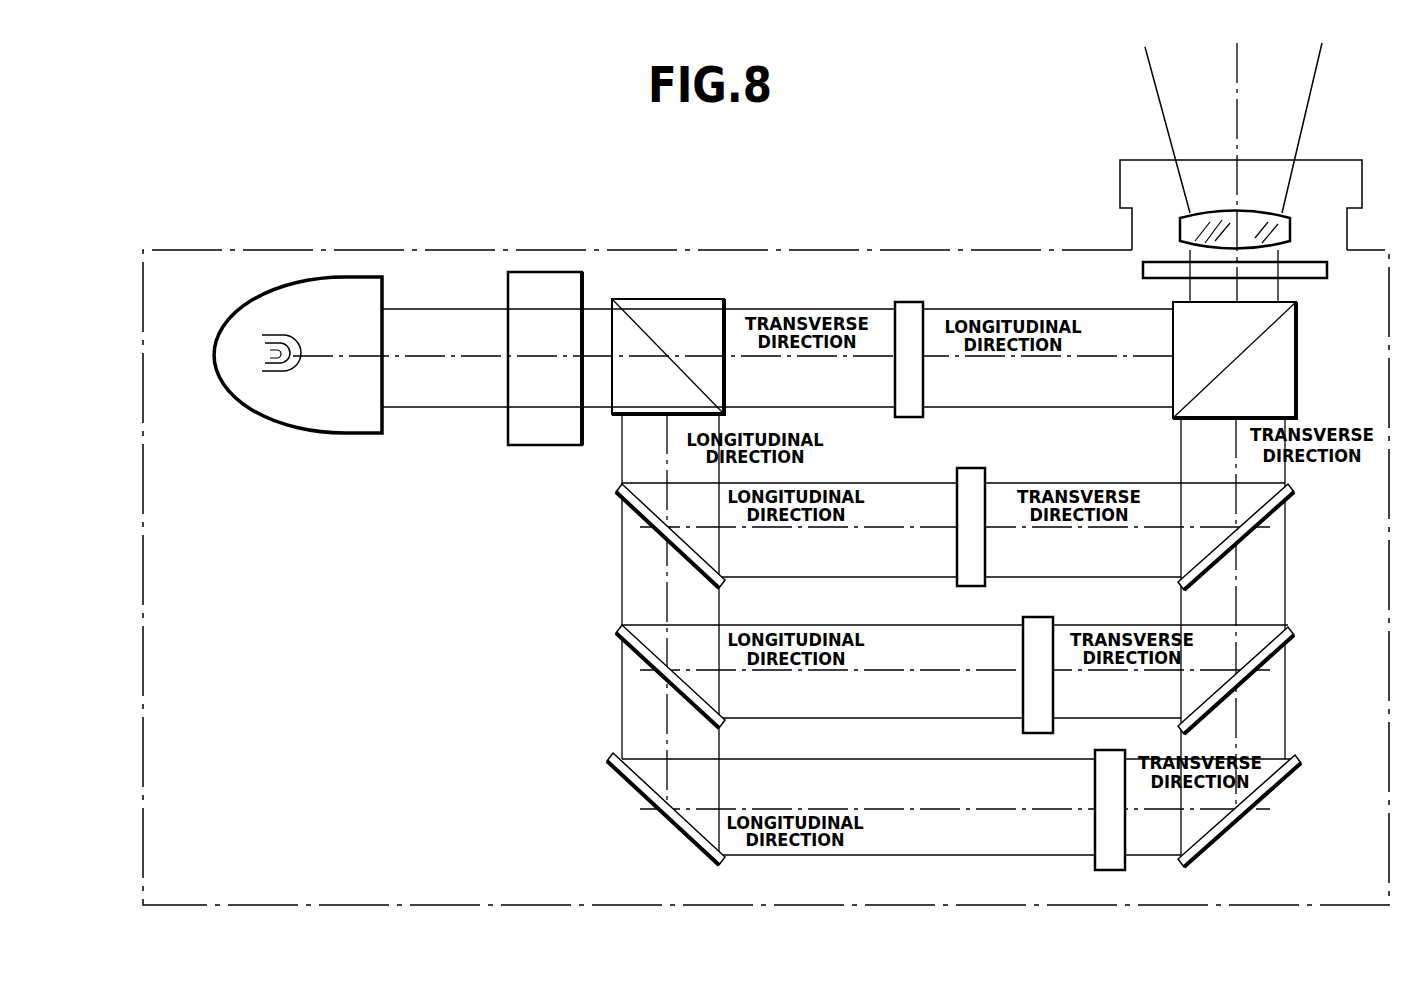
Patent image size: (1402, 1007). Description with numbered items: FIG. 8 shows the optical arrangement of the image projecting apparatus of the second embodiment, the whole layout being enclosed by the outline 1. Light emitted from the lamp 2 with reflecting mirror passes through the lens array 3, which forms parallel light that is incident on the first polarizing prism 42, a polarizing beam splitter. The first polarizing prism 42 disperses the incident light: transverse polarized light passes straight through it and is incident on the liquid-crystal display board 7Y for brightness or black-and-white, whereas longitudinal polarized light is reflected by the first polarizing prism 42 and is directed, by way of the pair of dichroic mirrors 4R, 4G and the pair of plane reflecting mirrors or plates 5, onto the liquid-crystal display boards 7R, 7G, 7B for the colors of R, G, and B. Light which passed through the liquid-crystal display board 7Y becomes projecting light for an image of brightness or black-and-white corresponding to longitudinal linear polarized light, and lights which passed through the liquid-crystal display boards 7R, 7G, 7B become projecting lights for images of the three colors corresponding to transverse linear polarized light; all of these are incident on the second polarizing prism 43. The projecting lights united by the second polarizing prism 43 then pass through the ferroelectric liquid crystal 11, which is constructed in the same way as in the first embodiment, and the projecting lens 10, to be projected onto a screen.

The projection optical system housing 1 is at (957, 250).
The lamp with reflecting mirror 2 is at (360, 432).
The lens array 3 is at (538, 446).
The first polarizing prism 42 is at (712, 298).
The second polarizing prism 43 is at (1292, 343).
The liquid-crystal display board 7Y is at (903, 301).
The liquid-crystal display board 7R is at (970, 468).
The liquid-crystal display board 7G is at (1040, 617).
The liquid-crystal display board 7B is at (1095, 790).
The dichroic mirror 4R is at (640, 510).
The dichroic mirror 4G is at (637, 652).
The plane reflecting mirror 5 is at (640, 790).
The projecting lens 10 is at (1288, 215).
The ferroelectric liquid crystal (FLC) 11 is at (1317, 270).